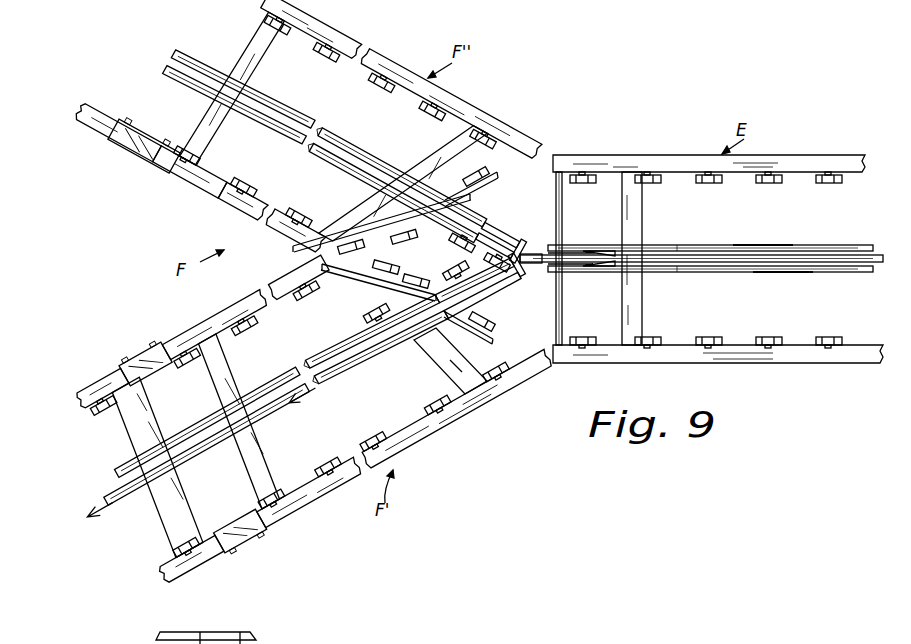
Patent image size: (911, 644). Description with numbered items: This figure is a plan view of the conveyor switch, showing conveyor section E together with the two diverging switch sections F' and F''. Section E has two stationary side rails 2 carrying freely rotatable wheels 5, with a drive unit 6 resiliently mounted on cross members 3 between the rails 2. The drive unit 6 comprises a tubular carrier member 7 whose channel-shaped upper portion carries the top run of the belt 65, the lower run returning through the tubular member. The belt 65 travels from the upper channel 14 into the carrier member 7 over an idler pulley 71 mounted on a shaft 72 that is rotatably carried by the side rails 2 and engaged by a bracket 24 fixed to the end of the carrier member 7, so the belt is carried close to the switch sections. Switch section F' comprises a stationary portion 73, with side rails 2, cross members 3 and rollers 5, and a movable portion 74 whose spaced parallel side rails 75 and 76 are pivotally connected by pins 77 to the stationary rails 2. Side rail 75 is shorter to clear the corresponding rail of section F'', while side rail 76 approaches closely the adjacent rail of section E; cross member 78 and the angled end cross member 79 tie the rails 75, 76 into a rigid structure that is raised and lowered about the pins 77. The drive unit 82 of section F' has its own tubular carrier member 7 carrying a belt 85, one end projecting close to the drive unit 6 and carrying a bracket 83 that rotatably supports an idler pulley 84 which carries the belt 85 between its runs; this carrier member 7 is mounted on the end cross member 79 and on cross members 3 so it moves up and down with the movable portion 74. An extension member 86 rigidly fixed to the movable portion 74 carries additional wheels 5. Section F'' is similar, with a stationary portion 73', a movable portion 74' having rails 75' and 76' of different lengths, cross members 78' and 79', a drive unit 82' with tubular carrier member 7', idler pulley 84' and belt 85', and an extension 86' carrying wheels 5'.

The side rails 2 is at (800, 157).
The cross members 3 is at (640, 211).
The wheels 5 is at (465, 283).
The drive unit 6 is at (834, 248).
The tubular carrier member 7 is at (478, 388).
The channel 14 is at (760, 248).
The bracket 24 is at (601, 272).
The belt 65 is at (804, 268).
The idler pulley 71 is at (544, 268).
The shaft 72 is at (563, 213).
The stationary portion 73 is at (191, 568).
The movable portion 74 is at (309, 502).
The side rail 75 is at (245, 307).
The side rail 76 is at (456, 409).
The pins 77 is at (120, 361).
The cross member 78 is at (239, 421).
The end cross member 79 is at (439, 361).
The drive unit 82 is at (206, 429).
The bracket 83 is at (440, 325).
The idler pulley 84 is at (480, 288).
The belt 85 is at (207, 422).
The extension member 86 is at (382, 231).
The wheels 5' is at (403, 271).
The tubular carrier member 7' is at (243, 81).
The stationary portion 73' is at (190, 182).
The movable portion 74' is at (117, 142).
The side rail 75' is at (272, 217).
The side rail 76' is at (401, 79).
The cross member 78' is at (232, 88).
The end cross member 79' is at (403, 183).
The drive unit 82' is at (238, 104).
The idler pulley 84' is at (494, 217).
The belt 85' is at (388, 184).
The extension 86' is at (378, 286).